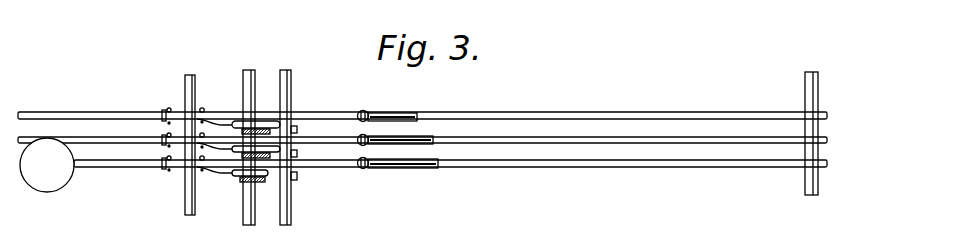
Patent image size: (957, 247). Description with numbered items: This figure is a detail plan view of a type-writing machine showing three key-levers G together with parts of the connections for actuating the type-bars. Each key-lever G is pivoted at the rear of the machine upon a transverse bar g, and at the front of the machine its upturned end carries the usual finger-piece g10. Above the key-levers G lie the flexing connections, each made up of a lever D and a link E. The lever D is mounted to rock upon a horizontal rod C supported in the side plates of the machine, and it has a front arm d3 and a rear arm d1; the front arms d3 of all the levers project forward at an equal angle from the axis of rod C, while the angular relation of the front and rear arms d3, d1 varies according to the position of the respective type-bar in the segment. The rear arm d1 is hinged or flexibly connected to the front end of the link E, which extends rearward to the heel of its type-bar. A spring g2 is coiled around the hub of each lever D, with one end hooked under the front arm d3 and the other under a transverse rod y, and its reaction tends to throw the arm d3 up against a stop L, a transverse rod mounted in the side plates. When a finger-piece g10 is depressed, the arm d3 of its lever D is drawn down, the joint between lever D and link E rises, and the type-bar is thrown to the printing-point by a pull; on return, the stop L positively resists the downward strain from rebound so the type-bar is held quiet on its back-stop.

The key-lever G is at (552, 113).
The finger-piece g10 is at (47, 165).
The front arm of lever d3 is at (153, 181).
The stop L is at (194, 75).
The spring g2 is at (236, 202).
The horizontal rod C is at (252, 131).
The transverse rod y is at (292, 218).
The lever D is at (299, 114).
The rear arm of lever d1 is at (360, 111).
The link E is at (399, 114).
The transverse bar g is at (805, 86).